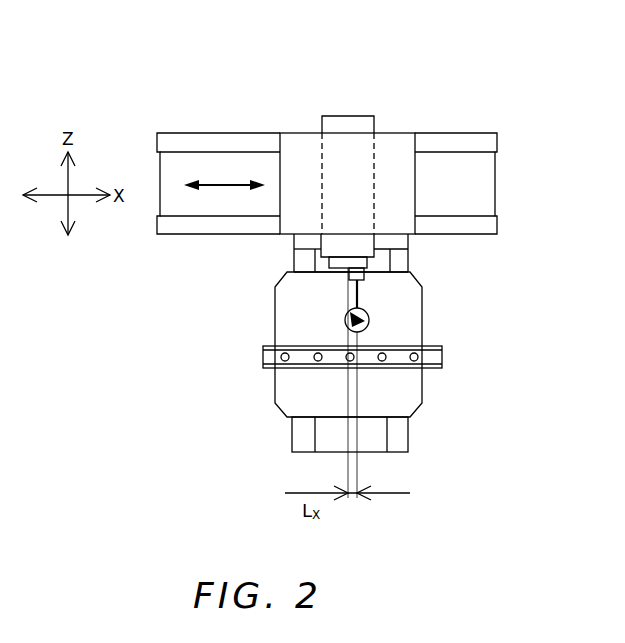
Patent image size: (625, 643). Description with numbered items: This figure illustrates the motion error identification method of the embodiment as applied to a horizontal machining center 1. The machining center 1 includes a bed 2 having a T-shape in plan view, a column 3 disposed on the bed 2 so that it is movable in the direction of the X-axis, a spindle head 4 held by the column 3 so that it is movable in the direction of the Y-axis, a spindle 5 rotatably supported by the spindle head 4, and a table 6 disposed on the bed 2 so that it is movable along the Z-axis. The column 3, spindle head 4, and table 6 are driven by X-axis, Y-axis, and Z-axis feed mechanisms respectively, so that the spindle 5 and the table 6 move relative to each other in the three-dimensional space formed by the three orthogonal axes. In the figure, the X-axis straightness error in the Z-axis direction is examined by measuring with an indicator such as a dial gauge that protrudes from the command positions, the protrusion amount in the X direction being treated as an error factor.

The horizontal machining center 1 is at (518, 347).
The bed 2 is at (490, 193).
The column 3 is at (404, 134).
The spindle head 4 is at (350, 120).
The spindle 5 is at (376, 251).
The table 6 is at (278, 325).